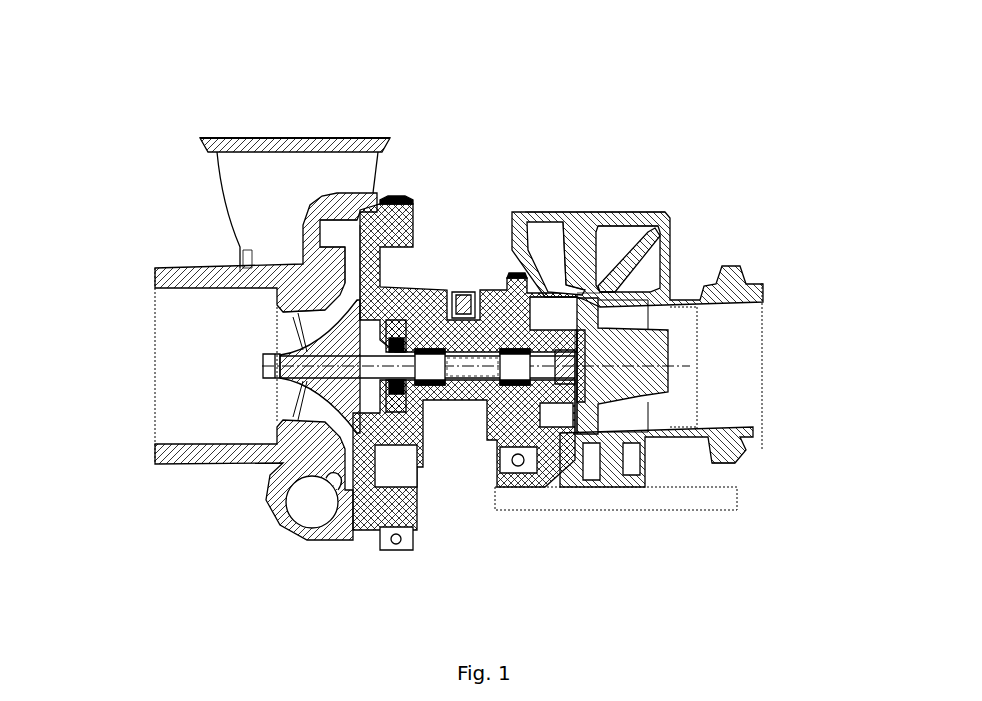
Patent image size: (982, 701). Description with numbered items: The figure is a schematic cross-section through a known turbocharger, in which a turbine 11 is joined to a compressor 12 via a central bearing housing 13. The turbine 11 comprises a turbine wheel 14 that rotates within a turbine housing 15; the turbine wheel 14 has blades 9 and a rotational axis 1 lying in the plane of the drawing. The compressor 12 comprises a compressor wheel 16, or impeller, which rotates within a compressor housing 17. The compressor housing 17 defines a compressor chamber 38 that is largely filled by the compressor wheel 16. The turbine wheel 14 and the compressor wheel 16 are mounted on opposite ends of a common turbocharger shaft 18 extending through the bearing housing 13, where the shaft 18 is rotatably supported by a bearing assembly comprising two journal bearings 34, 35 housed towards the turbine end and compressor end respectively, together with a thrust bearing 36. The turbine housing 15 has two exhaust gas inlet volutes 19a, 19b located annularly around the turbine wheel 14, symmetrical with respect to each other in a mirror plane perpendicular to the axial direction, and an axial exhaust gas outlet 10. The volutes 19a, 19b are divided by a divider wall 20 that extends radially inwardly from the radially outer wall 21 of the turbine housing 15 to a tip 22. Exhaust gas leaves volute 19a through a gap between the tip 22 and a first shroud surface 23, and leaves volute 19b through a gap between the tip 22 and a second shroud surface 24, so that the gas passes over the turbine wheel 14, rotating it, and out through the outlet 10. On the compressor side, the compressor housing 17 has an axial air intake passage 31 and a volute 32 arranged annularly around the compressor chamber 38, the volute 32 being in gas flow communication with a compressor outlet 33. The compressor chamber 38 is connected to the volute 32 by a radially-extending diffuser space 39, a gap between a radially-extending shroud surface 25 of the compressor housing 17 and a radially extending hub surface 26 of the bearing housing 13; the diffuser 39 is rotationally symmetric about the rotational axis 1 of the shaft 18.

The rotational axis 1 is at (247, 363).
The blades 9 is at (617, 332).
The axial exhaust gas outlet 10 is at (683, 335).
The turbine 11 is at (612, 187).
The compressor 12 is at (190, 498).
The central bearing housing 13 is at (442, 265).
The turbine wheel 14 is at (597, 380).
The turbine housing 15 is at (707, 438).
The compressor wheel 16 is at (308, 352).
The compressor housing 17 is at (300, 278).
The turbocharger shaft 18 is at (493, 379).
The exhaust gas inlet volute 19a is at (637, 238).
The exhaust gas inlet volute 19b is at (567, 283).
The divider wall 20 is at (587, 290).
The radially outer wall 21 is at (608, 211).
The tip 22 is at (575, 288).
The first shroud surface 23 is at (603, 290).
The second shroud surface 24 is at (580, 293).
The shroud surface 25 is at (330, 227).
The hub surface 26 is at (358, 290).
The axial air intake passage 31 is at (178, 313).
The volute 32 is at (347, 260).
The compressor outlet 33 is at (238, 137).
The journal bearing 34 is at (537, 384).
The journal bearing 35 is at (440, 384).
The thrust bearing 36 is at (403, 316).
The compressor chamber 38 is at (316, 322).
The diffuser space 39 is at (345, 245).